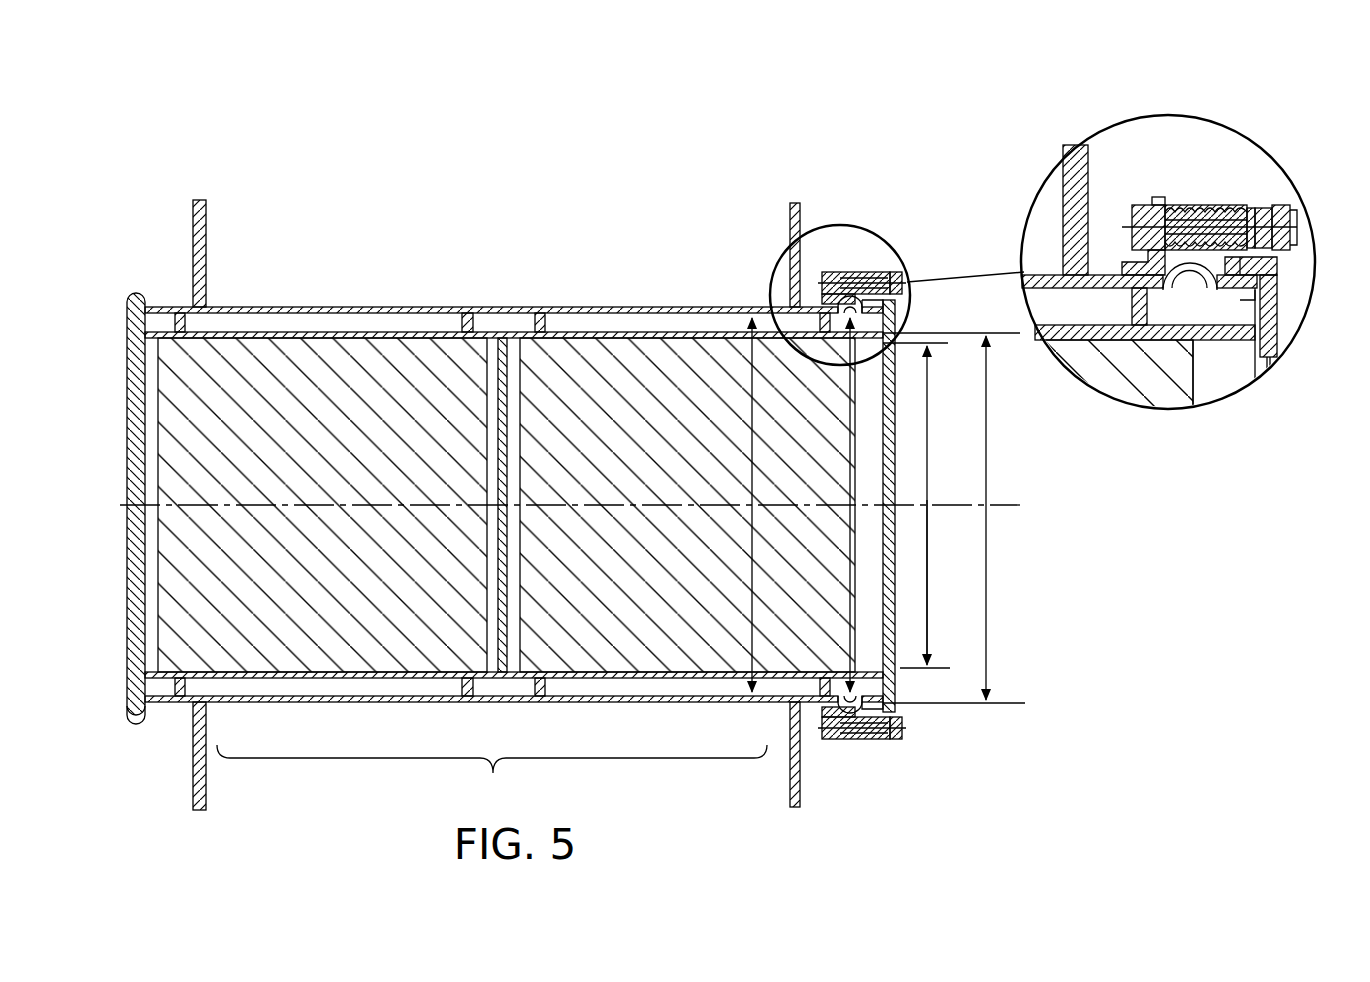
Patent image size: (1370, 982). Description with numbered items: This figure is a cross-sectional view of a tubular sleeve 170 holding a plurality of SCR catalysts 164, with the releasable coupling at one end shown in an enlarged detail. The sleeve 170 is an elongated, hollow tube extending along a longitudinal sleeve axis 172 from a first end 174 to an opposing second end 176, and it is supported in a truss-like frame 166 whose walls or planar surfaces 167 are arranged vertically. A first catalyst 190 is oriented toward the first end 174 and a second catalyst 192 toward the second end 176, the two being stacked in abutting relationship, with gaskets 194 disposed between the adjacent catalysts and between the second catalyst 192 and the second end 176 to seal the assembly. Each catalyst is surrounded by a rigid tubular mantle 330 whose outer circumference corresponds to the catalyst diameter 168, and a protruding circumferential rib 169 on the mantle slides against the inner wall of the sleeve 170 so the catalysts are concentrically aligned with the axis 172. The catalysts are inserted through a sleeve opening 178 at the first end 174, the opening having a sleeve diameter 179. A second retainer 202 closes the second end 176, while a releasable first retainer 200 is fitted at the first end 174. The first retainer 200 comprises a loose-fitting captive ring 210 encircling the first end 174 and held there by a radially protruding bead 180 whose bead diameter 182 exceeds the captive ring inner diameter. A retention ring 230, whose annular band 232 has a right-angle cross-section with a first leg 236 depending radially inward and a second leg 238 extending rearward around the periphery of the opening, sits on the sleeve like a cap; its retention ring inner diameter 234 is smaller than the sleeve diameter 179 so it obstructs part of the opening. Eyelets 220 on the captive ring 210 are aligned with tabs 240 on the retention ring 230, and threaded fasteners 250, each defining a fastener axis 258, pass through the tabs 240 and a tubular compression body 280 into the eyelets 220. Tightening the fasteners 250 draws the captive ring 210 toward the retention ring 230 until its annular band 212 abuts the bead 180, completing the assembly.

The SCR catalysts 164 is at (492, 774).
The truss-like frame 166 is at (207, 245).
The walls or planar surfaces 167 is at (800, 205).
The catalyst diameter 168 is at (988, 472).
The circumferential rib 169 is at (500, 338).
The sleeve 170 is at (498, 703).
The longitudinal sleeve axis 172 is at (1022, 505).
The first end 174 is at (1072, 230).
The second end 176 is at (132, 712).
The sleeve opening 178 is at (927, 648).
The sleeve diameter 179 is at (752, 578).
The bead 180 is at (1150, 360).
The bead diameter 182 is at (850, 588).
The first catalyst 190 is at (610, 350).
The second catalyst 192 is at (232, 350).
The gaskets 194 is at (178, 314).
The first retainer 200 is at (1086, 439).
The second retainer 202 is at (129, 298).
The captive ring 210 is at (833, 270).
The annular band 212 is at (1138, 300).
The eyelets 220 is at (1148, 205).
The retention ring 230 is at (905, 297).
The annular band 232 is at (1283, 205).
The retention ring inner diameter 234 is at (928, 470).
The first leg 236 is at (1242, 300).
The second leg 238 is at (1212, 345).
The tabs 240 is at (1262, 208).
The fasteners 250 is at (902, 279).
The fastener axis 258 is at (1293, 225).
The compression body 280 is at (860, 272).
The tubular mantle 330 is at (352, 331).